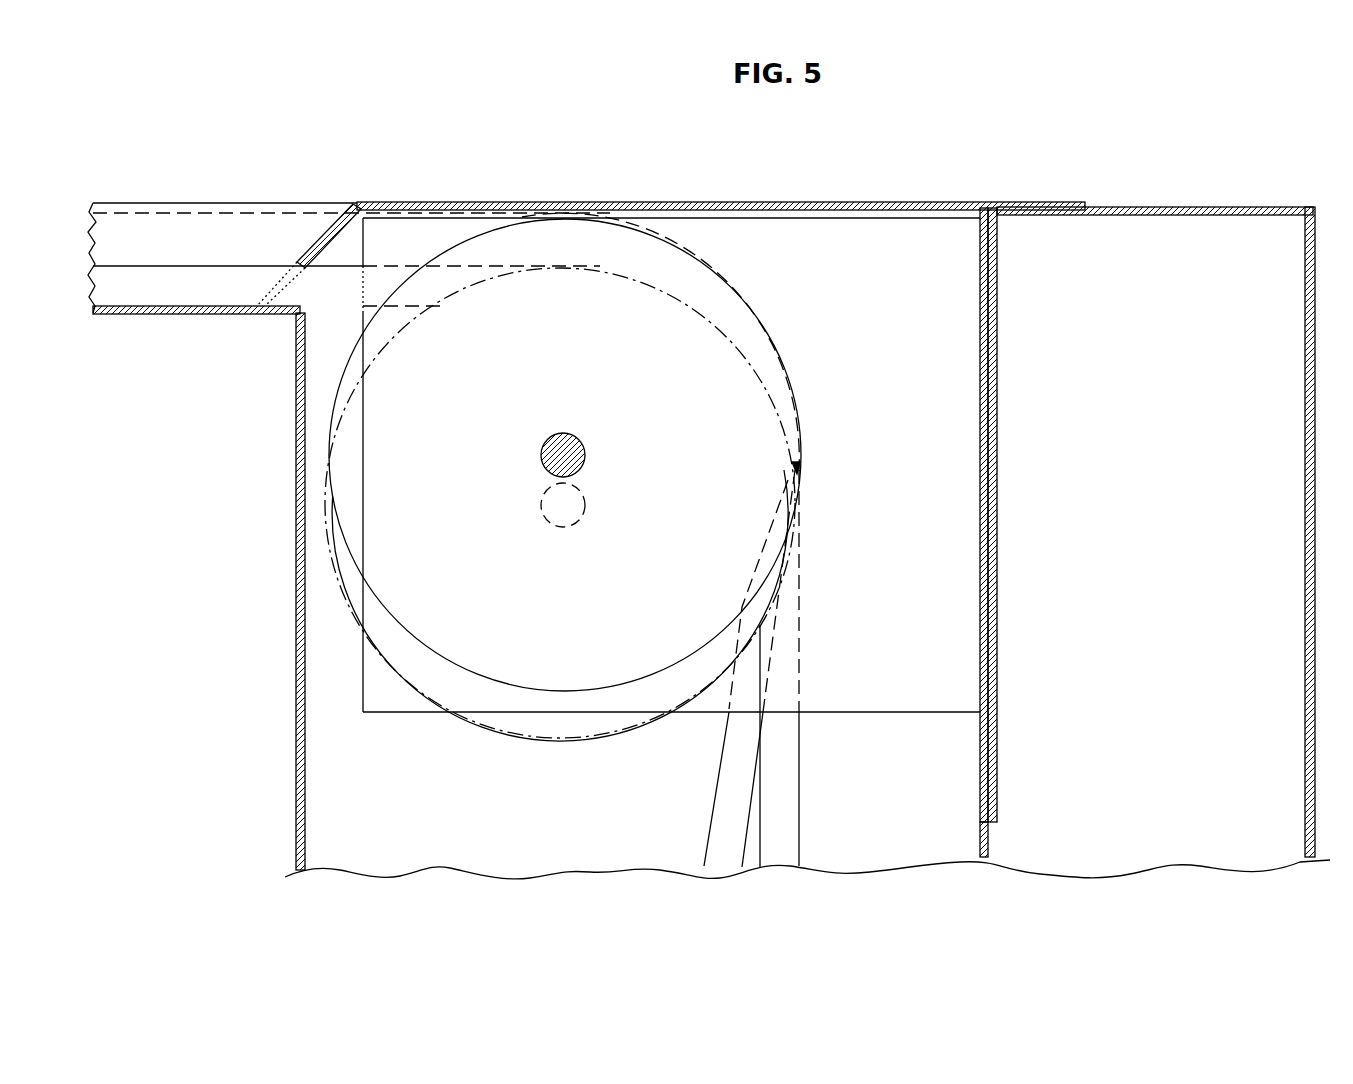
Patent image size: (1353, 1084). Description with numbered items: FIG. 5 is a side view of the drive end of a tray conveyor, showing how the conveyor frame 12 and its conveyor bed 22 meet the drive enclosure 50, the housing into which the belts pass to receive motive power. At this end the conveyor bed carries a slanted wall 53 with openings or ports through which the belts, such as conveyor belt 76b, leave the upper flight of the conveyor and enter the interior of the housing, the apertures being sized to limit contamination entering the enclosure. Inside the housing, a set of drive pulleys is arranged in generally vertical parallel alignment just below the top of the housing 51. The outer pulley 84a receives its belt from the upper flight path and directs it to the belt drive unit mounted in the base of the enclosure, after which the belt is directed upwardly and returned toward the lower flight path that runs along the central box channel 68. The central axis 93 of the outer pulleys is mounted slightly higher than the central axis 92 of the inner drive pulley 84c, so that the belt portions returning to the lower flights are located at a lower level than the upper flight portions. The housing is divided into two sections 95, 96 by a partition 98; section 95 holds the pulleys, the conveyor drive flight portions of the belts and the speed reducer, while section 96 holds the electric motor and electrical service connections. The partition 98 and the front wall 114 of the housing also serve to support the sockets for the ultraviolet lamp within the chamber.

The conveyor bed 22 is at (243, 203).
The slanted wall 53 is at (306, 250).
The top of the housing 51 is at (843, 216).
The conveyor frame 12 is at (983, 205).
The drive enclosure 50 is at (1180, 207).
The conveyor belt 76b is at (152, 283).
The central box channel 68 is at (209, 316).
The outer pulley 84a is at (343, 354).
The inner drive pulley 84c is at (380, 653).
The central axis 93 is at (548, 436).
The central axis 92 is at (548, 503).
The section 95 is at (906, 480).
The section 96 is at (1164, 480).
The front wall 114 is at (296, 788).
The partition 98 is at (988, 845).